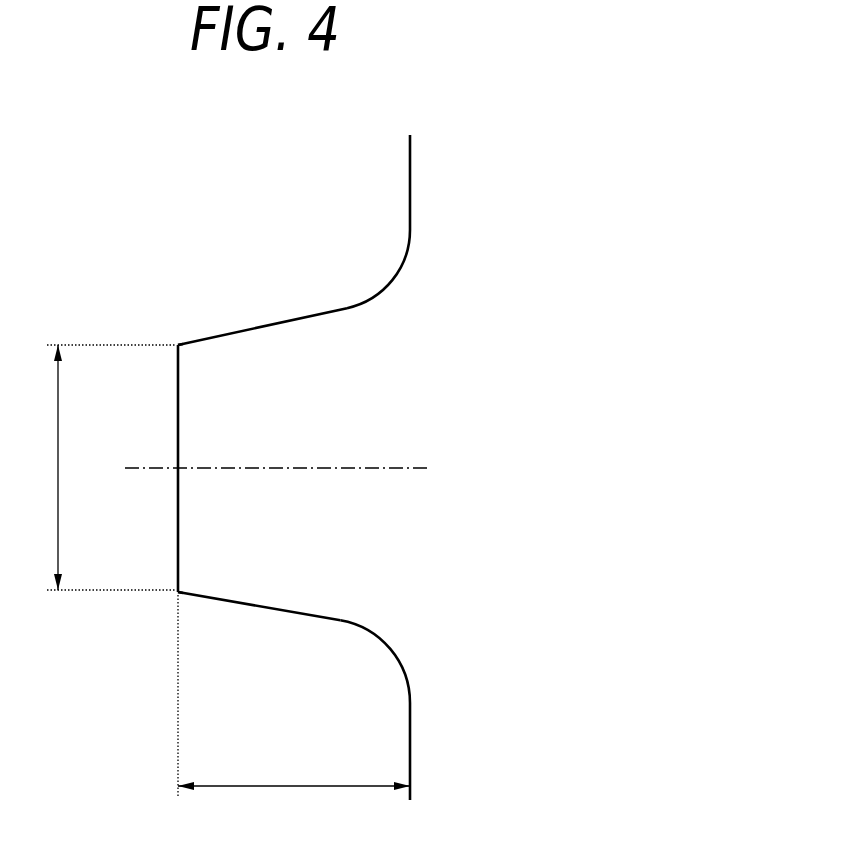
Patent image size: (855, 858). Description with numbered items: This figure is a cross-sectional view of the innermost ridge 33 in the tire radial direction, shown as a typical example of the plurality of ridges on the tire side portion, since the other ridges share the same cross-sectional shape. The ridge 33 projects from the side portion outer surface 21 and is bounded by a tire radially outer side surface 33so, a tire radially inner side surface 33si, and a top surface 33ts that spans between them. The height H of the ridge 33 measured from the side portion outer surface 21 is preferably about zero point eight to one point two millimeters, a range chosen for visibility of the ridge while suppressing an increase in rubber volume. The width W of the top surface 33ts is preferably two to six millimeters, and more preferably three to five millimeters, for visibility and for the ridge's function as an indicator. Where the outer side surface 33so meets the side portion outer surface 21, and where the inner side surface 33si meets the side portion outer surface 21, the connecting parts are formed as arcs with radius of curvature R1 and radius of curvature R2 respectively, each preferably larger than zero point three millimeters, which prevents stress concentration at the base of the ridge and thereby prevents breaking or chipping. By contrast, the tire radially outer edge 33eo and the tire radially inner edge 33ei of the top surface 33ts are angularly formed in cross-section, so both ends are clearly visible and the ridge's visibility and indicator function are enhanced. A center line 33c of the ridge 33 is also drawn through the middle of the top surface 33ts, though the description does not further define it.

The side portion outer surface 21 is at (410, 197).
The ridge 33 is at (254, 460).
The tire radially outer side surface 33so is at (266, 328).
The tire radially inner side surface 33si is at (261, 607).
The top surface 33ts is at (178, 408).
The tire radially outer edge 33eo is at (176, 343).
The tire radially inner edge 33ei is at (176, 593).
The center line of groove 33c is at (276, 443).
The radius of curvature R1 is at (368, 280).
The radius of curvature R2 is at (368, 655).
The width W is at (105, 467).
The height H is at (294, 696).